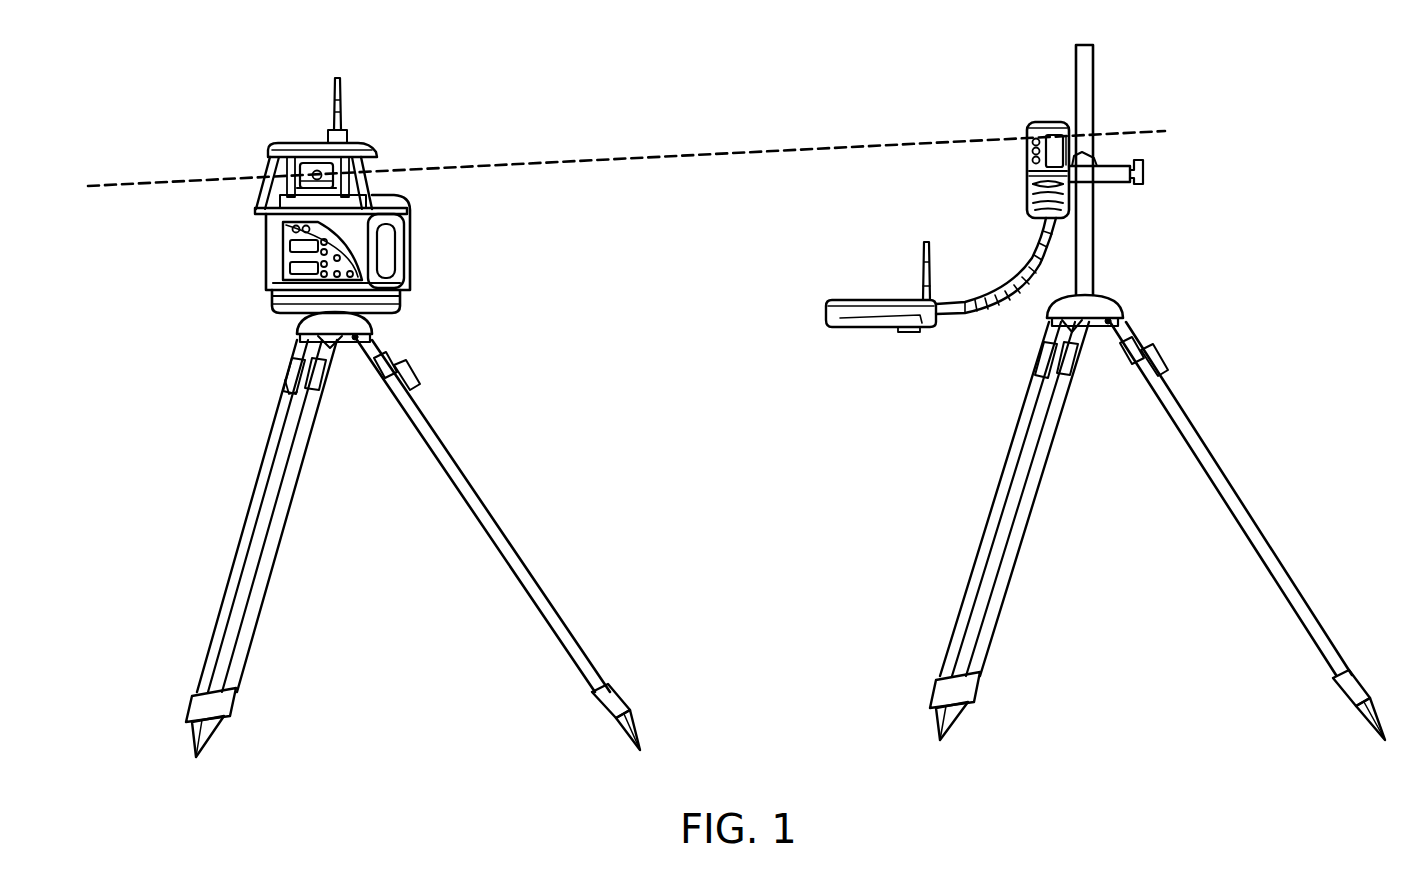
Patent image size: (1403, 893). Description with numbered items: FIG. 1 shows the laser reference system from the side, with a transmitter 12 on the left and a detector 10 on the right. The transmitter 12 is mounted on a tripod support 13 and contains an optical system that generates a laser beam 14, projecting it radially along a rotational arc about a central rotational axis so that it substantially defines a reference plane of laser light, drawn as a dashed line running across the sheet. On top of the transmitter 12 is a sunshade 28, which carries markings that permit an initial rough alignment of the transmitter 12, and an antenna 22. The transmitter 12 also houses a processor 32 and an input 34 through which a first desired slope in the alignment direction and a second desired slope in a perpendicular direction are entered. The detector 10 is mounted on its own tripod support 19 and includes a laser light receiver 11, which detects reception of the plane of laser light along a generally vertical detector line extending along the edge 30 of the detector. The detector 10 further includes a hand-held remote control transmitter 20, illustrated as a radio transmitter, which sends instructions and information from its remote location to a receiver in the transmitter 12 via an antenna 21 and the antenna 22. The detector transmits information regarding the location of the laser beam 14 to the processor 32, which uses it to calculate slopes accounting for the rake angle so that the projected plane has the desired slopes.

The detector 10 is at (1046, 114).
The laser light receiver 11 is at (1066, 196).
The transmitter 12 is at (382, 140).
The tripod support 13 is at (510, 544).
The laser beam 14 is at (728, 151).
The tripod support 19 is at (970, 598).
The hand-held remote control transmitter 20 is at (866, 296).
The antenna 21 is at (932, 268).
The antenna 22 is at (342, 90).
The sunshade 28 is at (302, 142).
The edge of the detector 30 is at (1022, 132).
The processor 32 is at (414, 246).
The input 34 is at (288, 262).